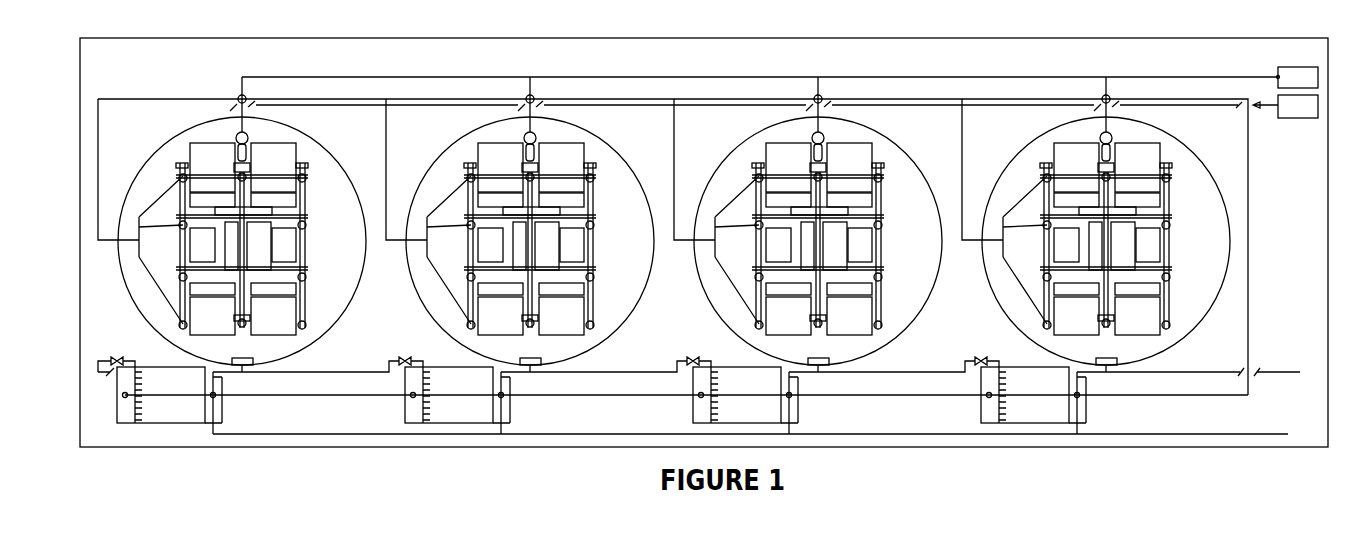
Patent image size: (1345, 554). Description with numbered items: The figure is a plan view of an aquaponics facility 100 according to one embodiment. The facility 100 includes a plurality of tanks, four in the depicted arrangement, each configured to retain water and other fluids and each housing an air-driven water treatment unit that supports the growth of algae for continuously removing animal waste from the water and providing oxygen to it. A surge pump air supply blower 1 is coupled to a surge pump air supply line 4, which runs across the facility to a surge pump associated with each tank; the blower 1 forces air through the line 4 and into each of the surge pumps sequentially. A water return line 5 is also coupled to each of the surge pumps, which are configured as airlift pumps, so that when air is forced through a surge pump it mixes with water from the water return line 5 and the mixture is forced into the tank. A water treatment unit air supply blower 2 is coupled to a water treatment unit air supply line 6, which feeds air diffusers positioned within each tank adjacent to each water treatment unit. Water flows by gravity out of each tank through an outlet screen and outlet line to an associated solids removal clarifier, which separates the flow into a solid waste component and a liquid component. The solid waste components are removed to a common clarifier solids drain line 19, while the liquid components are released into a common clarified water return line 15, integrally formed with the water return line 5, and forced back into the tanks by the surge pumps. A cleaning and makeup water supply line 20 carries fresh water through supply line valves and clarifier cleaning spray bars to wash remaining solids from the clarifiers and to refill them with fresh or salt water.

The facility 100 is at (782, 38).
The surge pump air supply blower 1 is at (1290, 67).
The water treatment unit air supply blower 2 is at (1288, 118).
The surge pump air supply line 4 is at (1157, 77).
The water return line 5 is at (1180, 99).
The water treatment unit air supply line 6 is at (1203, 106).
The clarified water return line 15 is at (676, 98).
The clarifier solids drain line 19 is at (1215, 436).
The cleaning and makeup water supply line 20 is at (1273, 373).